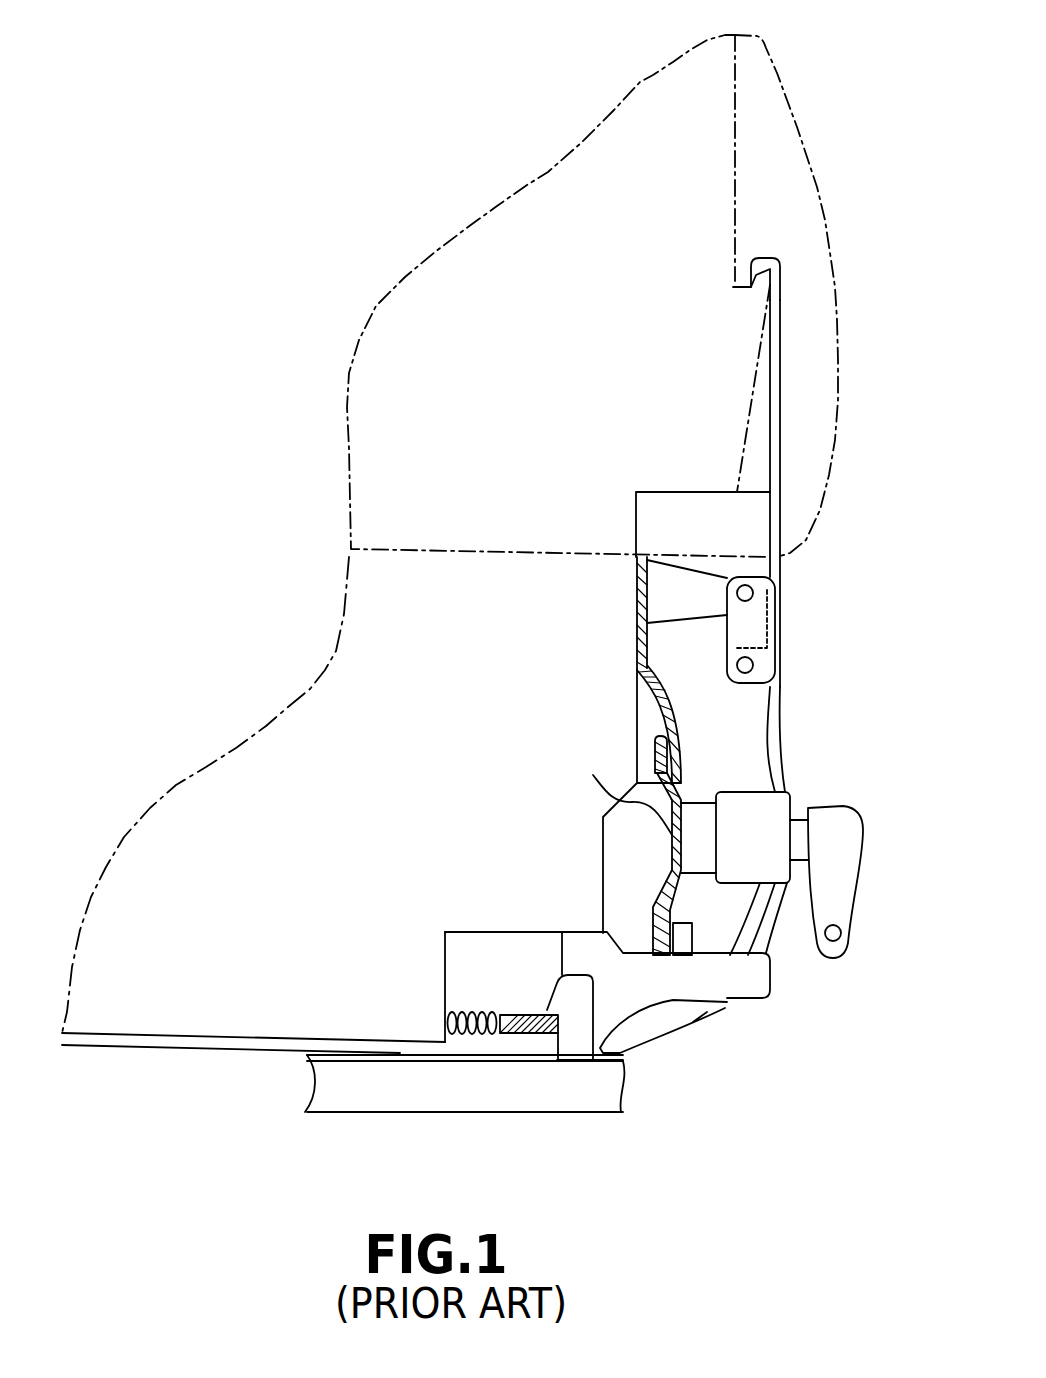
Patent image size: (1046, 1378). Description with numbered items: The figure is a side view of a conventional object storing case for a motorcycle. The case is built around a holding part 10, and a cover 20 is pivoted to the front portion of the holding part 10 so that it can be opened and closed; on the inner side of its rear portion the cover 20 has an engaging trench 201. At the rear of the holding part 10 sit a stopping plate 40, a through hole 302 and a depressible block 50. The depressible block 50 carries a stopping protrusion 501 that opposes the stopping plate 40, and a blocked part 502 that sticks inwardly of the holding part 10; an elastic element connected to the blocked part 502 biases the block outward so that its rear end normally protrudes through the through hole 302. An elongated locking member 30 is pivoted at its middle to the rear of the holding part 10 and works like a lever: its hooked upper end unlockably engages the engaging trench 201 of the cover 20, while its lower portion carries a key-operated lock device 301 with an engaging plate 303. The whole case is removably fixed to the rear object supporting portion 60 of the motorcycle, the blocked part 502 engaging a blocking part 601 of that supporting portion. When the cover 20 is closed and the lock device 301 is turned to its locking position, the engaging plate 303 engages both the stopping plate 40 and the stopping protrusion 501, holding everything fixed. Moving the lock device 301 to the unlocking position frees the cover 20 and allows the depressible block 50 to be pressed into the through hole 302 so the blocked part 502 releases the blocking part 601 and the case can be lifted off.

The holding part 10 is at (299, 752).
The cover 20 is at (539, 212).
The engaging trench 201 is at (738, 288).
The locking member 30 is at (777, 512).
The lock device 301 is at (753, 813).
The through hole 302 is at (770, 947).
The engaging plate 303 is at (639, 745).
The stopping plate 40 is at (642, 690).
The depressible block 50 is at (680, 983).
The stopping protrusion 501 is at (687, 943).
The blocked part 502 is at (520, 1017).
The rear object supporting portion 60 is at (500, 1112).
The blocking part 601 is at (585, 1002).